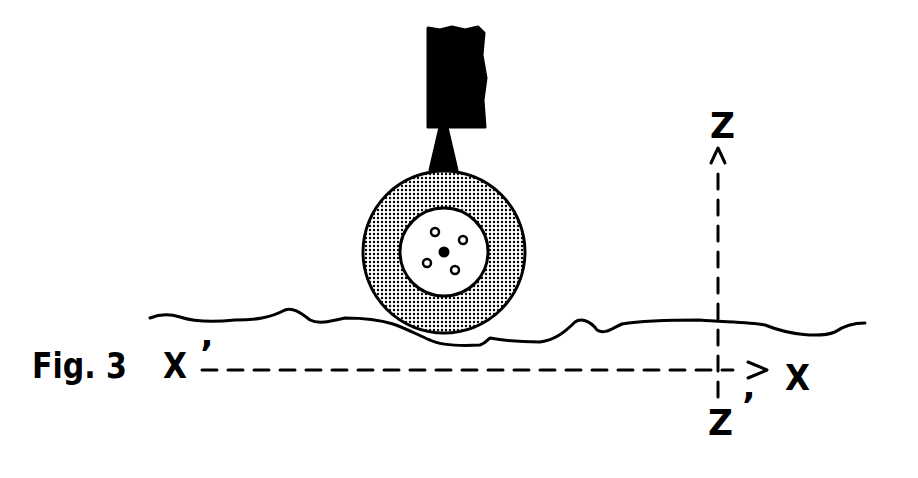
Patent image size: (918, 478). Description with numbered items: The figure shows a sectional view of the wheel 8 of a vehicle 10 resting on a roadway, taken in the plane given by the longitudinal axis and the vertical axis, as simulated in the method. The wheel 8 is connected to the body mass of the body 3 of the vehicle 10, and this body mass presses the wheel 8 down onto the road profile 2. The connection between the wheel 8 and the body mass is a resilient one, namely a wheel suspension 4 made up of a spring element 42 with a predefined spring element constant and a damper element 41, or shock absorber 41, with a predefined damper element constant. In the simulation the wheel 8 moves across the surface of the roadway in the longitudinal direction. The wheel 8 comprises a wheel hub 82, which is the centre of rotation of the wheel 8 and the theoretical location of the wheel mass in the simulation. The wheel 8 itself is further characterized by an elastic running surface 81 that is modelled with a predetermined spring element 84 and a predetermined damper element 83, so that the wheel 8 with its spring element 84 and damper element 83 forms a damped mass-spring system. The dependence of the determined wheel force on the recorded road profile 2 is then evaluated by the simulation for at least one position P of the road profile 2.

The road profile 2 is at (298, 313).
The body 3 is at (486, 82).
The wheel suspension 4 is at (450, 155).
The damper element 41 is at (578, 227).
The spring element 42 is at (579, 192).
The wheel 8 is at (420, 107).
The running surface 81 is at (383, 190).
The wheel hub 82 is at (447, 238).
The damper element 83 is at (383, 237).
The spring element 84 is at (286, 235).
The vehicle 10 is at (605, 22).
The position P is at (575, 322).